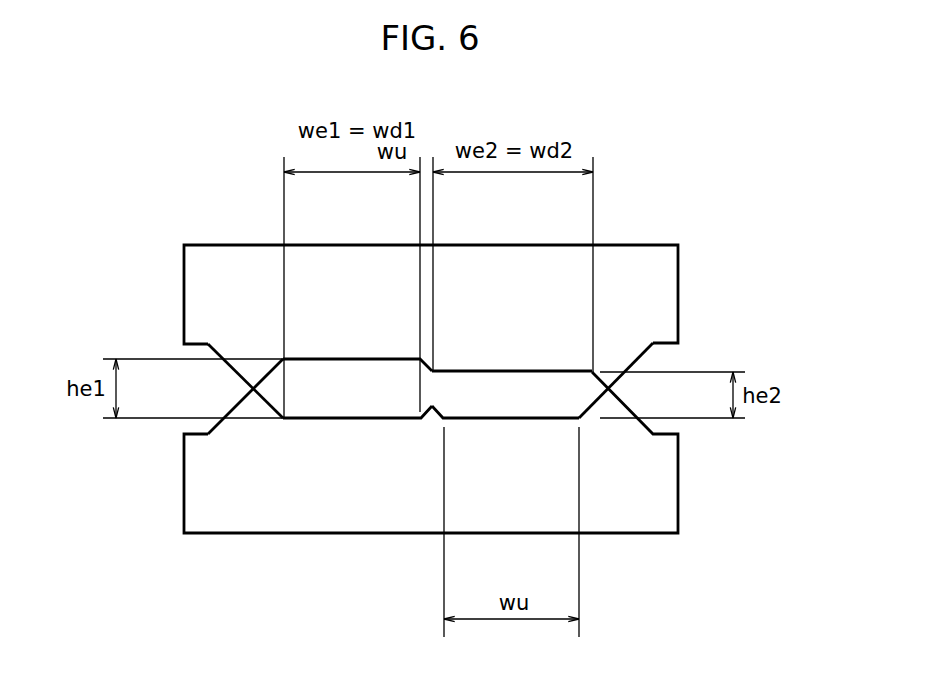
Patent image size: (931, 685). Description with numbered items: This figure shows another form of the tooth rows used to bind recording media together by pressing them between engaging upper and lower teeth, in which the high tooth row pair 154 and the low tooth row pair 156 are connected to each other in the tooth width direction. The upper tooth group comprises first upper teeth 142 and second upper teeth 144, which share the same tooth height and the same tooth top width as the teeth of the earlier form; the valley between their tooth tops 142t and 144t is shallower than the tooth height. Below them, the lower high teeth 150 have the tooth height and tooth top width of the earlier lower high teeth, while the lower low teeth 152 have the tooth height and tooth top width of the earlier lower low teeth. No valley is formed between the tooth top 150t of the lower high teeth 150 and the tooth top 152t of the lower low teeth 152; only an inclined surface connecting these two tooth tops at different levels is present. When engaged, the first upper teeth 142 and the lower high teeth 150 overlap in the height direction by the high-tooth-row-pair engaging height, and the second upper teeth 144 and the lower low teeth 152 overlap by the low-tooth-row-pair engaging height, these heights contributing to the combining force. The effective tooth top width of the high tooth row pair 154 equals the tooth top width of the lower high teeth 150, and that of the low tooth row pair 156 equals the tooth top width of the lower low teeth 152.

The first upper teeth 142 is at (232, 368).
The second upper teeth 144 is at (646, 352).
The lower high teeth 150 is at (235, 405).
The lower low teeth 152 is at (628, 408).
The high tooth row pair 154 is at (322, 295).
The low tooth row pair 156 is at (552, 297).
The tooth top of lower high teeth 150t is at (333, 359).
The tooth top of lower low teeth 152t is at (512, 372).
The tooth top of first upper teeth 142t is at (348, 418).
The tooth top of second upper teeth 144t is at (492, 418).